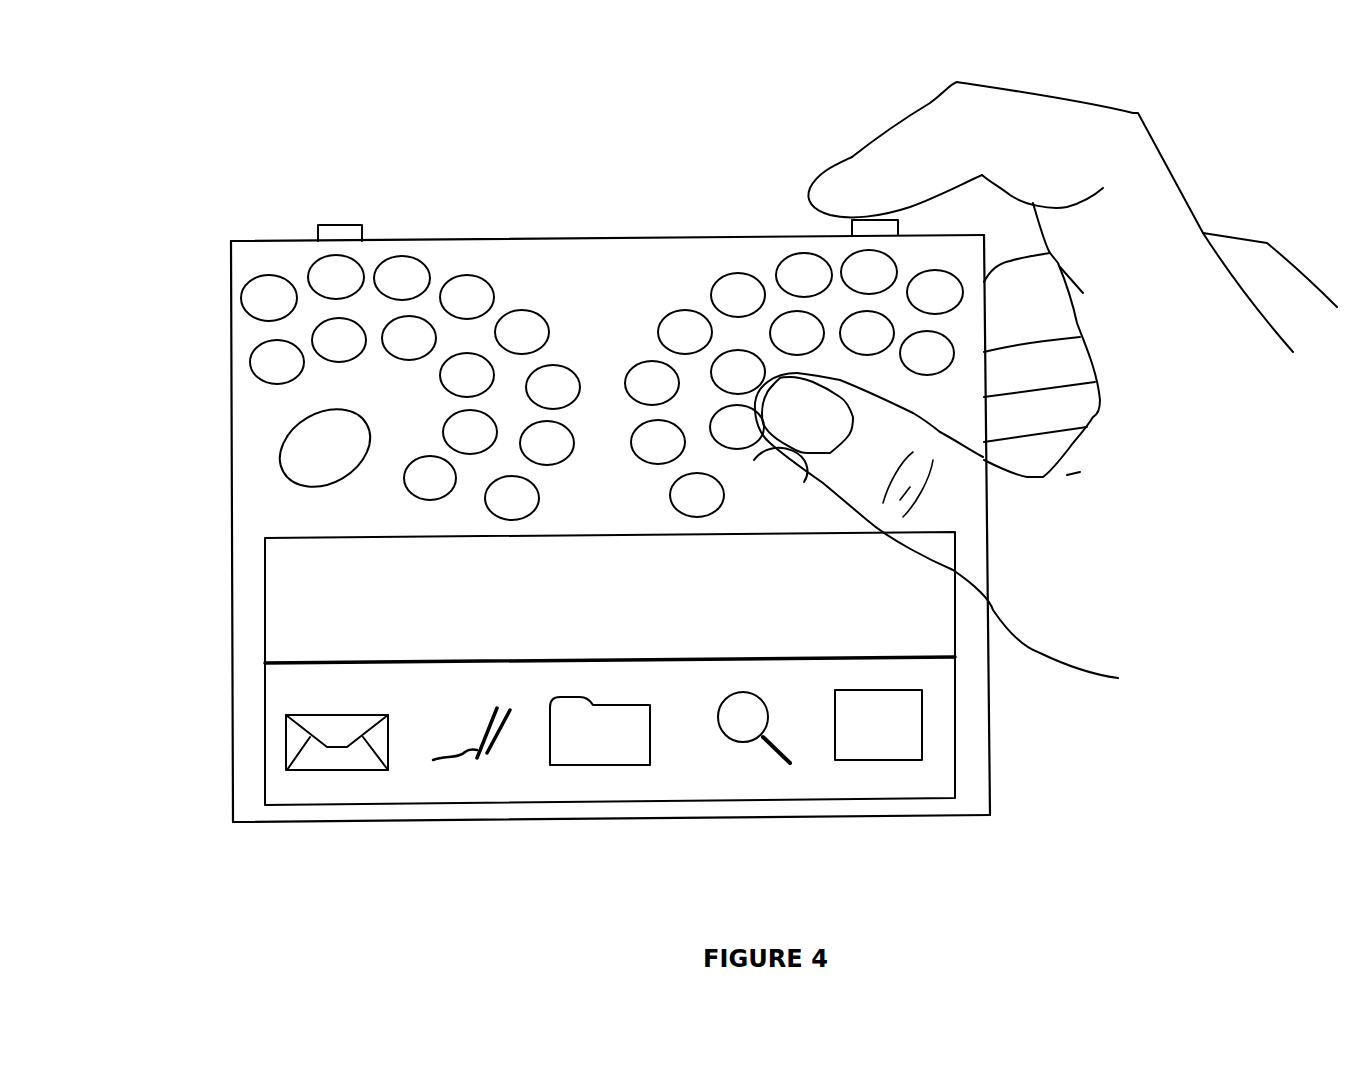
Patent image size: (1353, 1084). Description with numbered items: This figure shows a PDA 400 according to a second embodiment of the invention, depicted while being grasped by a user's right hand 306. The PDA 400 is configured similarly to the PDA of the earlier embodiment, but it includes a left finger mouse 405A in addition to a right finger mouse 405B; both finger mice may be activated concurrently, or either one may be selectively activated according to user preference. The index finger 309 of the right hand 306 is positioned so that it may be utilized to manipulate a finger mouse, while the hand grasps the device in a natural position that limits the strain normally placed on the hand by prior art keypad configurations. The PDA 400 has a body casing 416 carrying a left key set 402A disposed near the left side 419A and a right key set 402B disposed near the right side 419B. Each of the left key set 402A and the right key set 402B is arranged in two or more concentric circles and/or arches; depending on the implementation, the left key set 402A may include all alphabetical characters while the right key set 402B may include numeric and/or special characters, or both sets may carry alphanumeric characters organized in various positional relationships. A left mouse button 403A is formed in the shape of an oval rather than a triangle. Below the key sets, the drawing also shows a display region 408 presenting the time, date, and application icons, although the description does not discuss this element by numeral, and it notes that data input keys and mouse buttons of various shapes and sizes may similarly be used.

The PDA 400 is at (747, 134).
The index finger 309 is at (1146, 130).
The right hand 306 is at (1073, 551).
The left finger mouse 405A is at (338, 225).
The right finger mouse 405B is at (872, 218).
The body casing 416 is at (483, 260).
The left key set 402A is at (555, 368).
The right key set 402B is at (650, 365).
The left mouse button 403A is at (300, 490).
The left side 419A is at (232, 520).
The right side 419B is at (988, 710).
The display screen 408 is at (437, 793).